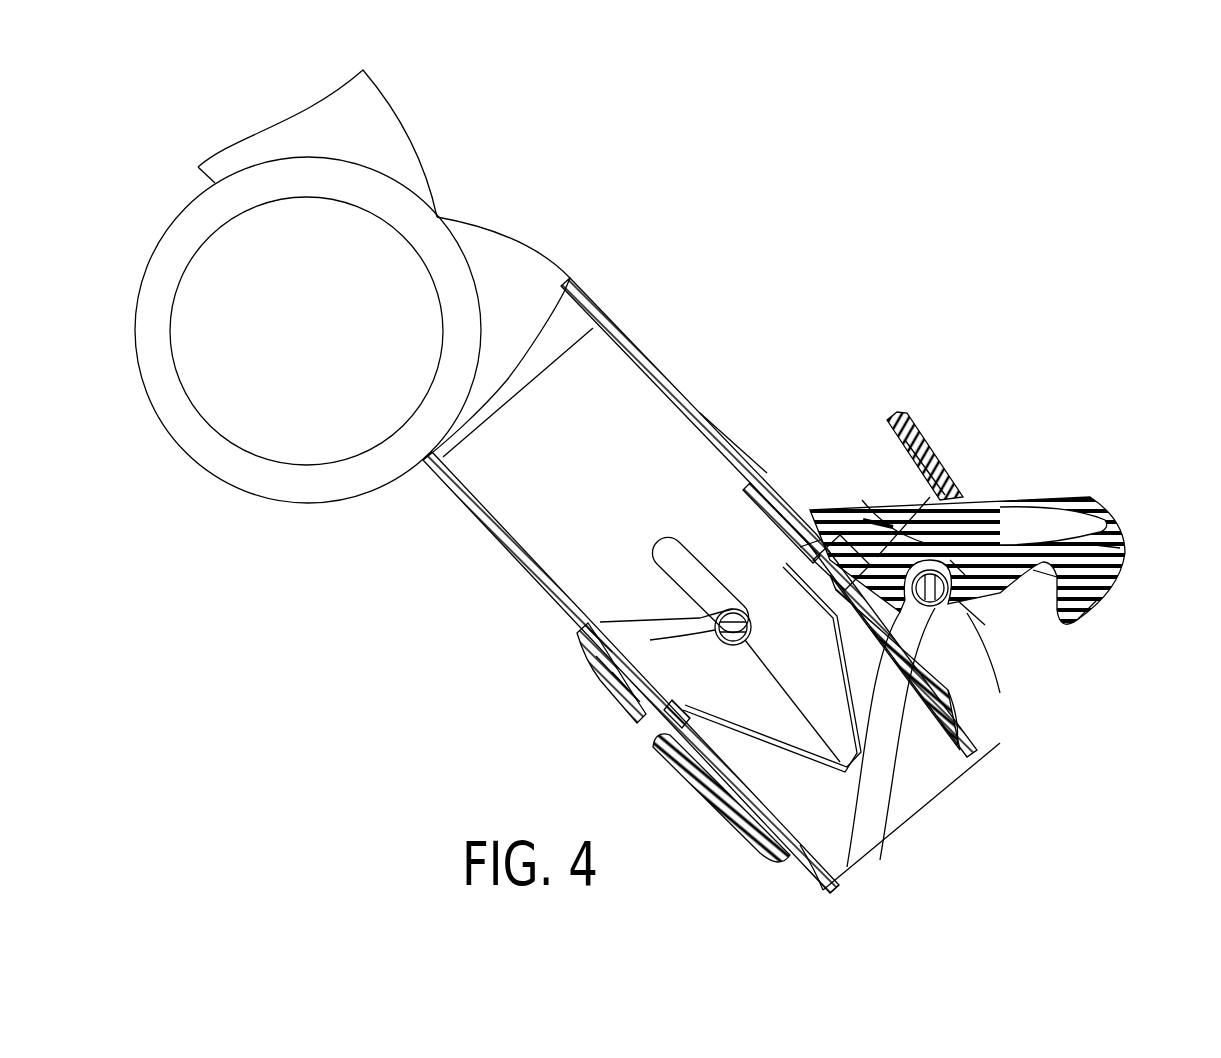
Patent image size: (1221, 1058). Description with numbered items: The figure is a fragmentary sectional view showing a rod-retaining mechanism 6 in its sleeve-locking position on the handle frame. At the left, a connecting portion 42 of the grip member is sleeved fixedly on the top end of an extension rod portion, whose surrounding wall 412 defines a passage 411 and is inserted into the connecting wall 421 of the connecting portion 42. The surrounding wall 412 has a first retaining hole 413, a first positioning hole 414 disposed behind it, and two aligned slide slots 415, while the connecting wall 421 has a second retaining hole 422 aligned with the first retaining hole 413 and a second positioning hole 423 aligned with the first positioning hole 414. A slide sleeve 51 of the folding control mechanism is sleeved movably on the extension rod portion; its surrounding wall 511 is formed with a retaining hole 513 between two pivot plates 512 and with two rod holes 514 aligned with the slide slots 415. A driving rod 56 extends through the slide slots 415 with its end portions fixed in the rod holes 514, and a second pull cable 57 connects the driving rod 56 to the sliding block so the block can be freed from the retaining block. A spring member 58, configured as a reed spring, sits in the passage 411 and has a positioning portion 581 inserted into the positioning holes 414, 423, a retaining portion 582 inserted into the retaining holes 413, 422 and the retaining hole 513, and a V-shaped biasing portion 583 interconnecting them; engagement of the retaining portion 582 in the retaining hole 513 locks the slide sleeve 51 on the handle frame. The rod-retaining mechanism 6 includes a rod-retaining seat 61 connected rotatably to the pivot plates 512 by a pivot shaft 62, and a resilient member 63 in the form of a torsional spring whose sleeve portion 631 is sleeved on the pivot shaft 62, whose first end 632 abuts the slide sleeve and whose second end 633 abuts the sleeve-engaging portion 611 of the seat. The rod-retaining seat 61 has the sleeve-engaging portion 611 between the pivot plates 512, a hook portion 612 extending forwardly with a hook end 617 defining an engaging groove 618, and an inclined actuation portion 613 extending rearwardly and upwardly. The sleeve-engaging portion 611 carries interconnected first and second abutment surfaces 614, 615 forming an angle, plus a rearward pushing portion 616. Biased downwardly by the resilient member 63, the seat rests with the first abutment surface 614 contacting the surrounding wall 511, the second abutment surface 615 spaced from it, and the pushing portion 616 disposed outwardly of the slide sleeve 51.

The connecting portion 42 is at (477, 247).
The connecting wall 421 is at (587, 297).
The second retaining hole 422 is at (787, 487).
The first retaining hole 413 is at (767, 473).
The passage 411 is at (957, 762).
The surrounding wall 412 is at (822, 882).
The second positioning hole 423 is at (637, 723).
The slide slot 415 is at (665, 553).
The first positioning hole 414 is at (650, 747).
The rod hole 514 is at (650, 617).
The slide sleeve 51 is at (575, 655).
The driving rod 56 is at (600, 680).
The positioning portion 581 is at (607, 705).
The surrounding wall 511 is at (623, 717).
The spring member 58 is at (713, 813).
The V-shaped biasing portion 583 is at (823, 843).
The second pull cable 57 is at (855, 790).
The retaining hole 513 is at (818, 508).
The retaining portion 582 is at (867, 517).
The pivot plate 512 is at (978, 628).
The first abutment surface 614 is at (965, 625).
The rod-retaining mechanism 6 is at (1097, 485).
The rod-retaining seat 61 is at (1117, 517).
The hook portion 612 is at (1110, 552).
The hook end 617 is at (1083, 612).
The engaging groove 618 is at (1033, 590).
The inclined actuation portion 613 is at (895, 415).
The sleeve-engaging portion 611 is at (920, 460).
The second abutment surface 615 is at (940, 478).
The pushing portion 616 is at (862, 500).
The resilient member 63 is at (947, 565).
The second end 633 is at (947, 555).
The sleeve portion 631 is at (960, 602).
The first end 632 is at (870, 650).
The pivot shaft 62 is at (952, 760).